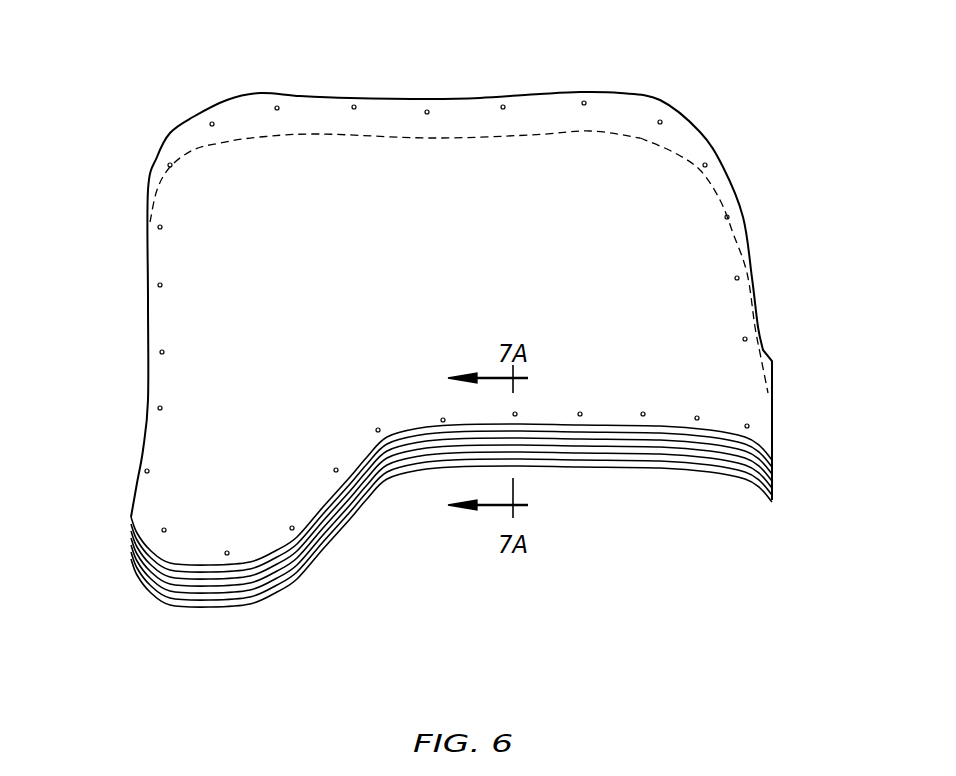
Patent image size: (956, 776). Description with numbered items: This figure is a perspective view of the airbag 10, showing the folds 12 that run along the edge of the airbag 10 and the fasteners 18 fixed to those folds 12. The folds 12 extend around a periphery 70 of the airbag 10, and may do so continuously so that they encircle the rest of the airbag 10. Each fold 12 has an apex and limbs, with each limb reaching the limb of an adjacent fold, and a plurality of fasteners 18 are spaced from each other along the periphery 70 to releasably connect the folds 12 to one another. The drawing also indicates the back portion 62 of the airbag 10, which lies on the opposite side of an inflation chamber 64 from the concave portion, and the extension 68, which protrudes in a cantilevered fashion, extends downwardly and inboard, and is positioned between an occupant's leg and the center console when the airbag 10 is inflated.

The airbag 10 is at (660, 97).
The folds 12 is at (618, 447).
The fastener 18 is at (278, 107).
The back portion 62 is at (252, 170).
The inflation chamber 64 is at (638, 267).
The extension 68 is at (220, 514).
The periphery 70 is at (332, 530).